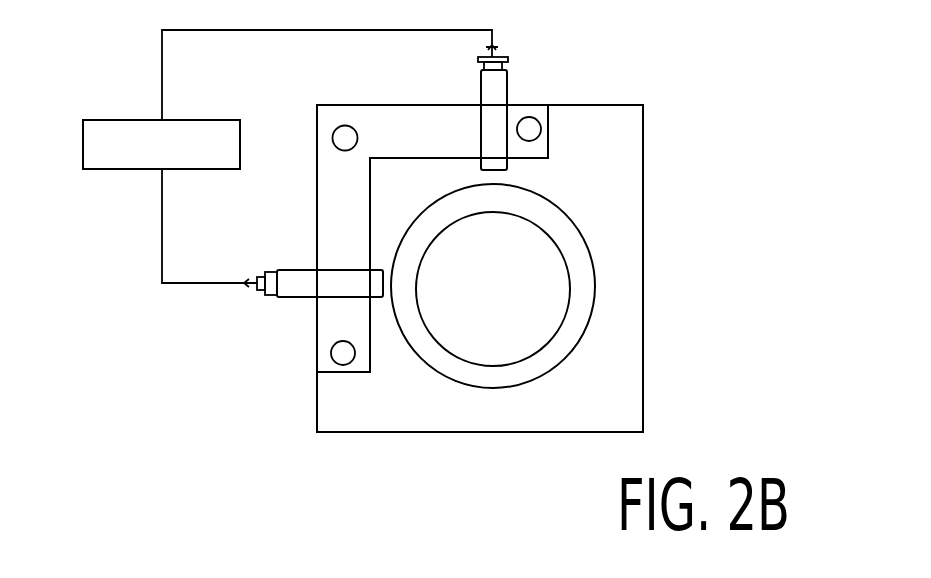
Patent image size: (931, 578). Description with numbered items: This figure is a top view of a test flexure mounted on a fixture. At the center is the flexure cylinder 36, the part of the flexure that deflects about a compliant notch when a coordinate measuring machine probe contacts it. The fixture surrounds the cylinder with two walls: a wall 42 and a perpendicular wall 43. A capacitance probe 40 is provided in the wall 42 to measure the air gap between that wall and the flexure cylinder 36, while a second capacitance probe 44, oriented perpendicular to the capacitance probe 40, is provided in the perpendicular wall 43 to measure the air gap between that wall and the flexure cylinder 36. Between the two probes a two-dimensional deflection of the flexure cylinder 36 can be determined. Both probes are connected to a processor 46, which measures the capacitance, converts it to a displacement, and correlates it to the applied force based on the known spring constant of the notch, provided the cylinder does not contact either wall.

The flexure cylinder 36 is at (593, 277).
The capacitance probe 40 is at (297, 298).
The wall 42 is at (317, 402).
The perpendicular wall 43 is at (413, 117).
The second capacitance probe 44 is at (508, 87).
The processor 46 is at (187, 120).